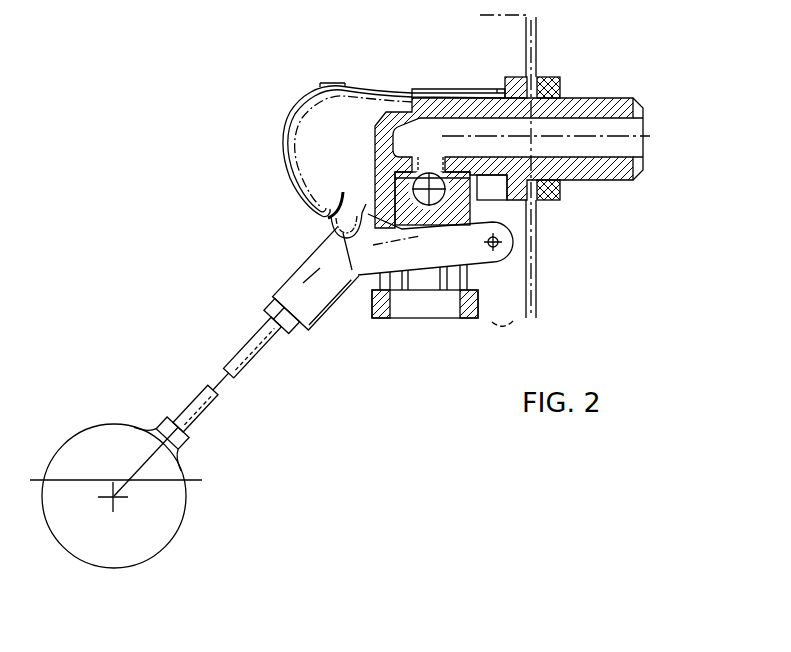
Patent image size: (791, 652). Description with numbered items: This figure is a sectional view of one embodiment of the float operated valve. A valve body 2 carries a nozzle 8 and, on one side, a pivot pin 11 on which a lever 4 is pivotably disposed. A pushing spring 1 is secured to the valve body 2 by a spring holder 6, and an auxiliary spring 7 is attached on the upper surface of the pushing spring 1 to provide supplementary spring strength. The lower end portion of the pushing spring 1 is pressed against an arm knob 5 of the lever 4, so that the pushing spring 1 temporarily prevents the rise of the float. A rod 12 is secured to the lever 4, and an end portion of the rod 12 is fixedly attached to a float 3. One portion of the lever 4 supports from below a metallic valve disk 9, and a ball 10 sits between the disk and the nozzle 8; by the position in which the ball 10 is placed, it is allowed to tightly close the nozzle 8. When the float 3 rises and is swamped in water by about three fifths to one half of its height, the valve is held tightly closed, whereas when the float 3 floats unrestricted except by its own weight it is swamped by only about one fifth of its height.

The pushing spring 1 is at (288, 115).
The valve body 2 is at (385, 108).
The float 3 is at (110, 437).
The lever 4 is at (324, 260).
The arm knob 5 is at (343, 192).
The spring holder 6 is at (436, 99).
The auxiliary spring 7 is at (340, 84).
The nozzle 8 is at (432, 160).
The metallic valve disk 9 is at (452, 199).
The ball 10 is at (447, 194).
The pivot pin 11 is at (502, 245).
The rod 12 is at (237, 355).